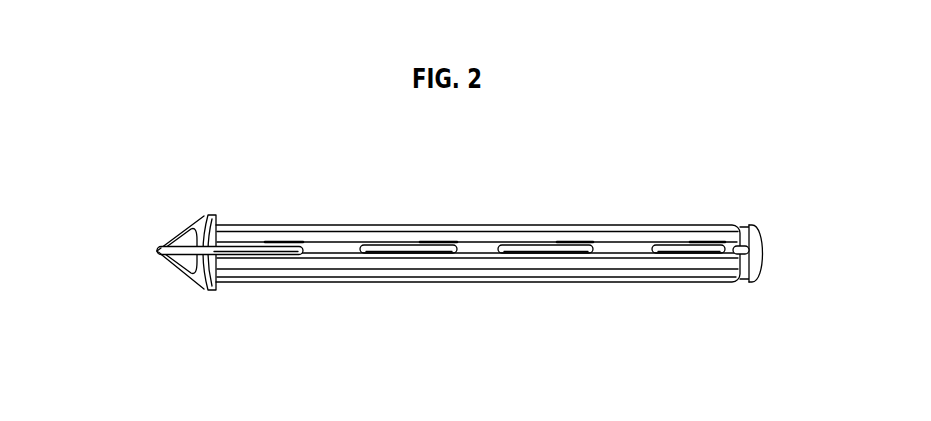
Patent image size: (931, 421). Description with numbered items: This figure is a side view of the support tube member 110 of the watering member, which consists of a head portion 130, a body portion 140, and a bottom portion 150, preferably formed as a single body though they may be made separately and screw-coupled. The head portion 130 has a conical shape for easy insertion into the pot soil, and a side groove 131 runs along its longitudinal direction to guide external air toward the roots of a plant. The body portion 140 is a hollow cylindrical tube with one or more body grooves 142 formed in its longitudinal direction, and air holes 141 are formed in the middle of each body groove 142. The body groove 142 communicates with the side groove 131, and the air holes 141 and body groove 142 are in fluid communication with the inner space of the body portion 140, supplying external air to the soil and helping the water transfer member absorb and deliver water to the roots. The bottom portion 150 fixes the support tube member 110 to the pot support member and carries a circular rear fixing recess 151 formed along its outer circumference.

The support tube member 110 is at (360, 208).
The head portion 130 is at (175, 272).
The side groove 131 is at (156, 249).
The body portion 140 is at (388, 267).
The air hole 141 is at (547, 253).
The body groove 142 is at (322, 252).
The bottom portion 150 is at (747, 283).
The rear fixing recess 151 is at (740, 224).